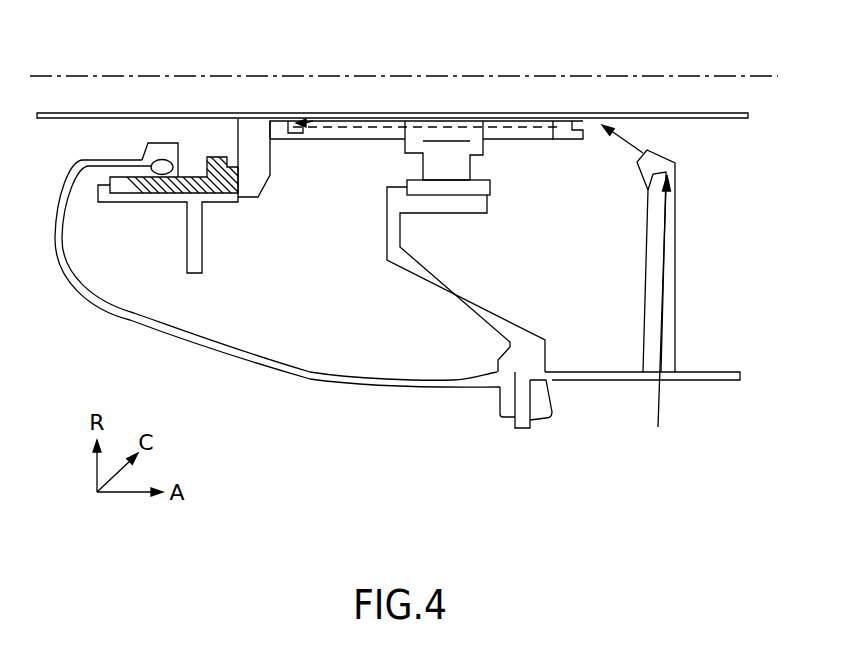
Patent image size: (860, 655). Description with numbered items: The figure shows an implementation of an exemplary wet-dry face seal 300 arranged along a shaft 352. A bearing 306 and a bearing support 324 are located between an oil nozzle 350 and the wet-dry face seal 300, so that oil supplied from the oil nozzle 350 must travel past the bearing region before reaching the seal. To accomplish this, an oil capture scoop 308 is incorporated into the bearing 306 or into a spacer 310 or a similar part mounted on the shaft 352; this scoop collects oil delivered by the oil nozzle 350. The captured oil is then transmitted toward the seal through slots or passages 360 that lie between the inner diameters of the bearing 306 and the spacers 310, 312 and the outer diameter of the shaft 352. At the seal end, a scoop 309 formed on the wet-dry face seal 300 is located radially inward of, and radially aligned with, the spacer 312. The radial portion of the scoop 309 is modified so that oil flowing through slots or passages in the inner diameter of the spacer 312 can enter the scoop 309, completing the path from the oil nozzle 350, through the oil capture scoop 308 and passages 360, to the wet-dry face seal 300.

The wet-dry face seal 300 is at (246, 108).
The bearing 306 is at (443, 126).
The oil capture scoop 308 is at (560, 133).
The scoop 309 is at (288, 121).
The spacer 310 is at (507, 133).
The spacer 312 is at (377, 123).
The bearing support 324 is at (497, 307).
The oil nozzle 350 is at (677, 226).
The shaft 352 is at (735, 110).
The slots or passages 360 is at (337, 127).